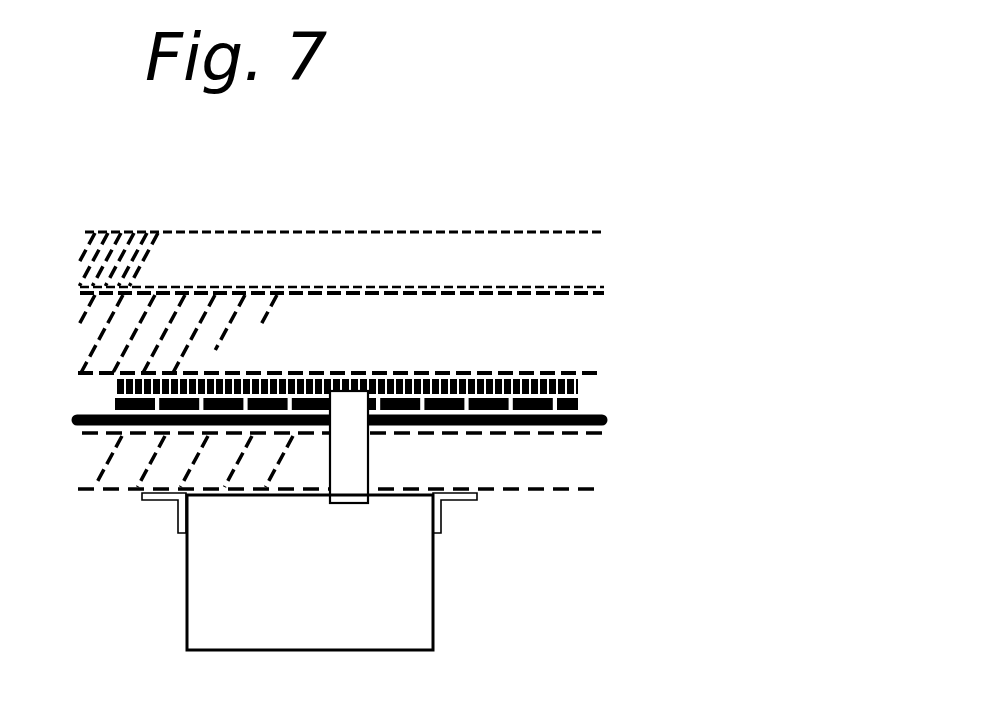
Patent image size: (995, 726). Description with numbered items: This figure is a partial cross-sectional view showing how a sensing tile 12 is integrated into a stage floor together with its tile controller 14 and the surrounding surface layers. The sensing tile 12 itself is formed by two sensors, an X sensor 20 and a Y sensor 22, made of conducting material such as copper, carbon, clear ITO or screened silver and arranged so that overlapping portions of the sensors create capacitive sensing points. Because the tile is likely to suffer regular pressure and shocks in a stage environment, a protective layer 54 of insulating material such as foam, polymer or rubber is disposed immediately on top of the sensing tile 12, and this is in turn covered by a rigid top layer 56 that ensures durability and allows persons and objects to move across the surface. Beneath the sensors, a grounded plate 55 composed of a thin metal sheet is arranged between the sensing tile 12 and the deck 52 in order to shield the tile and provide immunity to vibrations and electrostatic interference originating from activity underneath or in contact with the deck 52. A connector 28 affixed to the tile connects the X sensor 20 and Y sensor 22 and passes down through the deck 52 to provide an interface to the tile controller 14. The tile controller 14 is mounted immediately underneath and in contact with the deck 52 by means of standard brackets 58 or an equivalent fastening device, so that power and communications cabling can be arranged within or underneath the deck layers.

The sensing tile 12 is at (842, 358).
The tile controller 14 is at (321, 569).
The X sensor 20 is at (578, 385).
The Y sensor 22 is at (578, 405).
The connector 28 is at (362, 451).
The deck 52 is at (532, 475).
The protective layer 54 is at (533, 348).
The grounded plate 55 is at (605, 426).
The top layer 56 is at (533, 273).
The brackets 58 is at (176, 532).